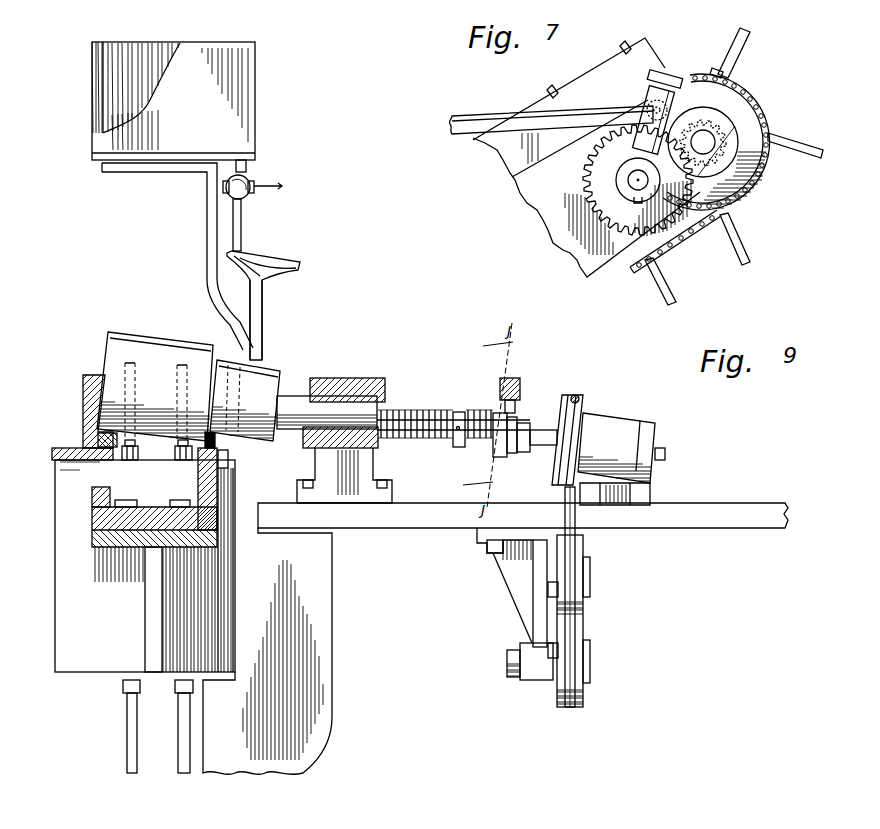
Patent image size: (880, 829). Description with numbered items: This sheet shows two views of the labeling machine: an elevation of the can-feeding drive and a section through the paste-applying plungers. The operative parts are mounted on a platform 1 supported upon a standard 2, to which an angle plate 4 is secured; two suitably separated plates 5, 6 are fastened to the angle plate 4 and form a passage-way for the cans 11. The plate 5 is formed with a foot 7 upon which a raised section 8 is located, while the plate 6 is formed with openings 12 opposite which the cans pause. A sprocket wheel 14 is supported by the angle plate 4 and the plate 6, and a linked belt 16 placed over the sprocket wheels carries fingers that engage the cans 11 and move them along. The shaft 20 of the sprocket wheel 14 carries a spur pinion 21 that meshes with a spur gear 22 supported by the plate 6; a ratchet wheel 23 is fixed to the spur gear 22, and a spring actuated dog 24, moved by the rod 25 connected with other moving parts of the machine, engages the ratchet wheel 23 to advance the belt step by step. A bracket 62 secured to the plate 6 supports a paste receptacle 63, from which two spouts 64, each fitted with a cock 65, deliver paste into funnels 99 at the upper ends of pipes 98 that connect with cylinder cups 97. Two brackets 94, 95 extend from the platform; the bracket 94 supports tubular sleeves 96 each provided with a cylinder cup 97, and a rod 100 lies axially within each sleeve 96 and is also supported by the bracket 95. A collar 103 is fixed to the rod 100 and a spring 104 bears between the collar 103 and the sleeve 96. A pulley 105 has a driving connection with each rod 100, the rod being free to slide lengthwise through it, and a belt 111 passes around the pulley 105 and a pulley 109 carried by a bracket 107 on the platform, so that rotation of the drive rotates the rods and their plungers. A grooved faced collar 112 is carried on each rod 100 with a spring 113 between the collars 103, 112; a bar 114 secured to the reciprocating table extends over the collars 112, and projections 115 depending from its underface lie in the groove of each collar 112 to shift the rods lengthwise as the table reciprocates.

In FIG. 9, the platform 1 is at (405, 528).
In FIG. 9, the standard 2 is at (332, 638).
In FIG. 9, the angle plate 4 is at (55, 557).
In FIG. 7, the plate 5 is at (610, 263).
In FIG. 9, the plate 5 is at (83, 428).
In FIG. 9, the plate 6 is at (222, 455).
In FIG. 9, the foot 7 is at (112, 452).
In FIG. 9, the raised section 8 is at (48, 450).
In FIG. 9, the cans 11 is at (155, 379).
In FIG. 9, the openings 12 is at (262, 446).
In FIG. 7, the sprocket wheel 14 is at (726, 166).
In FIG. 9, the linked belt 16 is at (140, 456).
In FIG. 7, the shaft 20 is at (703, 143).
In FIG. 7, the spur pinion 21 is at (712, 142).
In FIG. 7, the spur gear 22 is at (625, 180).
In FIG. 7, the ratchet wheel 23 is at (627, 177).
In FIG. 7, the spring actuated dog 24 is at (641, 134).
In FIG. 7, the rod 25 is at (551, 117).
In FIG. 9, the bracket 62 is at (210, 241).
In FIG. 9, the paste receptacle 63 is at (173, 93).
In FIG. 9, the spout 64 is at (248, 205).
In FIG. 9, the cock 65 is at (268, 194).
In FIG. 9, the bracket 94 is at (343, 371).
In FIG. 9, the bracket 95 is at (620, 418).
In FIG. 9, the tubular sleeve 96 is at (327, 412).
In FIG. 9, the cylinder cup 97 is at (268, 370).
In FIG. 9, the pipe 98 is at (266, 320).
In FIG. 9, the funnel 99 is at (263, 305).
In FIG. 9, the rod 100 is at (543, 430).
In FIG. 9, the collar 103 is at (458, 447).
In FIG. 9, the spring 104 is at (418, 409).
In FIG. 9, the pulley 105 is at (585, 398).
In FIG. 9, the bracket 107 is at (507, 581).
In FIG. 9, the pulley 109 is at (585, 605).
In FIG. 9, the belt 111 is at (580, 535).
In FIG. 9, the grooved faced collar 112 is at (514, 453).
In FIG. 9, the spring 113 is at (490, 414).
In FIG. 9, the bar 114 is at (520, 383).
In FIG. 9, the projections 115 is at (500, 456).